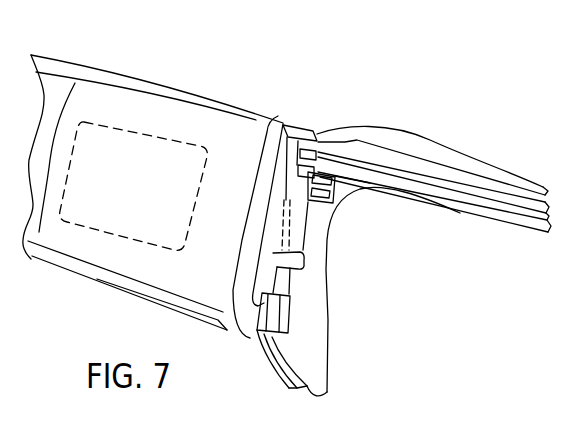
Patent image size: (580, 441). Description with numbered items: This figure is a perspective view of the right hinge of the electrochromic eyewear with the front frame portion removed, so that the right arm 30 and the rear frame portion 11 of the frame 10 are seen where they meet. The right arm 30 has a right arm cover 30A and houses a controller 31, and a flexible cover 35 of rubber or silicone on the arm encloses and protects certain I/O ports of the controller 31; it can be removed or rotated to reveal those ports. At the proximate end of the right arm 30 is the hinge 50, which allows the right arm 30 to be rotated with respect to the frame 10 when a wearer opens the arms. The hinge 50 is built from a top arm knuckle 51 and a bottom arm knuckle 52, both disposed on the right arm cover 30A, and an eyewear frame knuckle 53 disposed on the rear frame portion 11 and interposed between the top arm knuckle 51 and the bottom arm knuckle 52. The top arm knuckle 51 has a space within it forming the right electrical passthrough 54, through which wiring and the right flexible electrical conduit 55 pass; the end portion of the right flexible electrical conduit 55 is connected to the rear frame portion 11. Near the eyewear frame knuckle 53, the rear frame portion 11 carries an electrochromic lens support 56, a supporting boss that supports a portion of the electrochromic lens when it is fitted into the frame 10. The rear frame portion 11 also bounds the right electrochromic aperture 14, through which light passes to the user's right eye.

The frame 10 is at (422, 150).
The rear frame portion 11 is at (477, 172).
The right electrochromic aperture 14 is at (330, 352).
The right arm 30 is at (152, 78).
The right arm cover 30A is at (107, 89).
The controller 31 is at (143, 188).
The flexible cover 35 is at (133, 299).
The hinge 50 is at (310, 118).
The top arm knuckle 51 is at (297, 116).
The bottom arm knuckle 52 is at (248, 344).
The eyewear frame knuckle 53 is at (247, 268).
The right electrical passthrough 54 is at (301, 153).
The right flexible electrical conduit 55 is at (332, 197).
The electrochromic lens support 56 is at (296, 280).